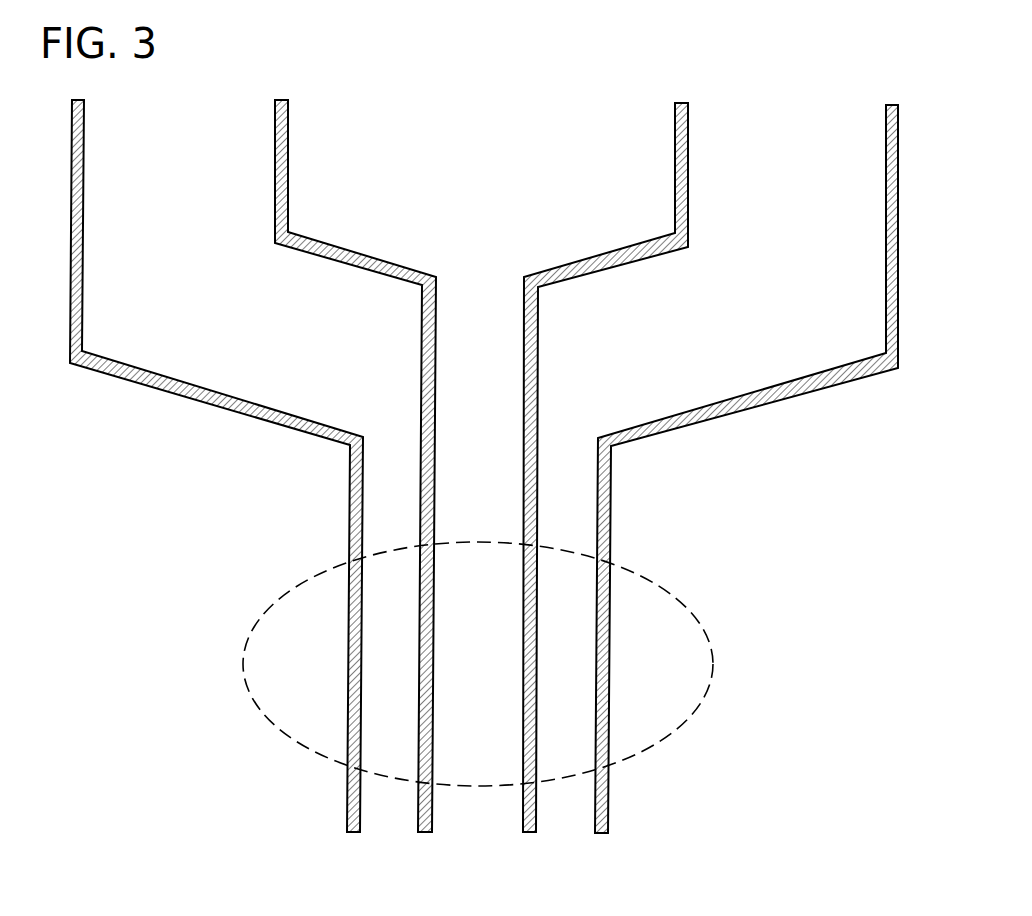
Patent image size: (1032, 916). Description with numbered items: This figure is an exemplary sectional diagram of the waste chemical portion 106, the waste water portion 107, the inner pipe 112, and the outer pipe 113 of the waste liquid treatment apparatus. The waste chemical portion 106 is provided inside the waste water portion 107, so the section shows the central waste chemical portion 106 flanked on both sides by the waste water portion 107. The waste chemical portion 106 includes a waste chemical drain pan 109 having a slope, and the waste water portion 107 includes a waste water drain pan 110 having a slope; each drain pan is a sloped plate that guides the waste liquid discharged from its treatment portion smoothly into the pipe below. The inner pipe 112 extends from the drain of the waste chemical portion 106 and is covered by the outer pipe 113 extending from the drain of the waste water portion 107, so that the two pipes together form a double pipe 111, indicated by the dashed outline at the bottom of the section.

The waste chemical portion 106 is at (481, 165).
The waste water portion 107 is at (787, 170).
The waste chemical drain pan 109 is at (613, 262).
The waste water drain pan 110 is at (147, 387).
The double pipe 111 is at (712, 668).
The inner pipe 112 is at (477, 719).
The outer pipe 113 is at (577, 788).